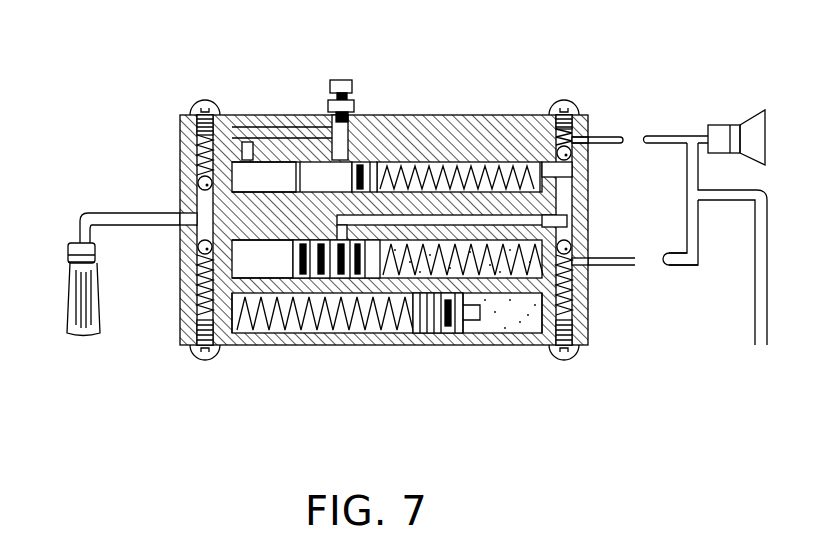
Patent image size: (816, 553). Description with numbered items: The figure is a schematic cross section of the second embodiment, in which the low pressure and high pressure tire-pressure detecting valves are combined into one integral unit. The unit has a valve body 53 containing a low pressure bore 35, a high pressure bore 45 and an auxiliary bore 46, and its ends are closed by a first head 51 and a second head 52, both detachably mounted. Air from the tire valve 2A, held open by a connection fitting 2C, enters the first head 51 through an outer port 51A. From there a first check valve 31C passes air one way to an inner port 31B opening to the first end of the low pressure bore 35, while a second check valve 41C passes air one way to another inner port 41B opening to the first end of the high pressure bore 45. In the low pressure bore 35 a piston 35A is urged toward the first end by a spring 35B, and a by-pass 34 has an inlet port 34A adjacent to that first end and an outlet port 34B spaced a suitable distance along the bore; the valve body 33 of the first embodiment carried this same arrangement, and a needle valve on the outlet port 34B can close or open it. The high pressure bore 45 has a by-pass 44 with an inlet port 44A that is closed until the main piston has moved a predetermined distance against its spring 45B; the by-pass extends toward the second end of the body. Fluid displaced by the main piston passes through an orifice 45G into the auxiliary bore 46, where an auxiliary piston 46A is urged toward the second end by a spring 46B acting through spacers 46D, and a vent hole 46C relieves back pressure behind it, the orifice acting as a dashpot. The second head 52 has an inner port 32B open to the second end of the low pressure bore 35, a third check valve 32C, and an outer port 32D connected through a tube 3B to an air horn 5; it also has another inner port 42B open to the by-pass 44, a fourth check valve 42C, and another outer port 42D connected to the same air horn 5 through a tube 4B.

The first head 51 is at (182, 115).
The inlet port 34A is at (246, 115).
The by-pass 34 is at (277, 115).
The low pressure bore 35 is at (293, 115).
The outlet port 34B is at (320, 113).
The valve body 33 is at (342, 80).
The piston 35A is at (367, 160).
The valve body 53 is at (450, 115).
The spring 35B is at (502, 160).
The inner port 32B is at (543, 113).
The second head 52 is at (578, 112).
The outer port 32D is at (588, 132).
The air horn 5 is at (752, 110).
The outlet tube 3B is at (620, 138).
The first check valve 31C is at (198, 180).
The inner port 31B is at (232, 170).
The inlet port 44A is at (298, 162).
The third check valve 32C is at (572, 158).
The by-pass 44 is at (500, 217).
The inner port 42B is at (575, 225).
The fourth check valve 42C is at (571, 248).
The connection fitting 2C is at (70, 248).
The outer port 51A is at (178, 223).
The valve 2A is at (68, 275).
The outer port 42D is at (582, 263).
The outlet tube 4B is at (640, 263).
The second check valve 41C is at (181, 290).
The inner port 41B is at (222, 347).
The vent hole 46C is at (236, 325).
The high pressure bore 45 is at (263, 263).
The auxiliary bore 46 is at (317, 325).
The spring 46B is at (358, 320).
The spacers 46D is at (425, 320).
The auxiliary piston 46A is at (460, 320).
The spring 45B is at (488, 293).
The orifice 45G is at (548, 350).